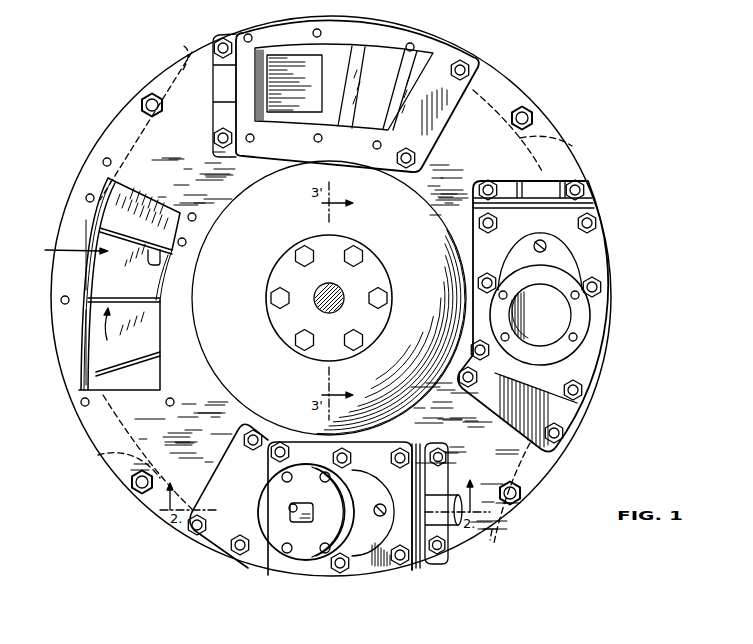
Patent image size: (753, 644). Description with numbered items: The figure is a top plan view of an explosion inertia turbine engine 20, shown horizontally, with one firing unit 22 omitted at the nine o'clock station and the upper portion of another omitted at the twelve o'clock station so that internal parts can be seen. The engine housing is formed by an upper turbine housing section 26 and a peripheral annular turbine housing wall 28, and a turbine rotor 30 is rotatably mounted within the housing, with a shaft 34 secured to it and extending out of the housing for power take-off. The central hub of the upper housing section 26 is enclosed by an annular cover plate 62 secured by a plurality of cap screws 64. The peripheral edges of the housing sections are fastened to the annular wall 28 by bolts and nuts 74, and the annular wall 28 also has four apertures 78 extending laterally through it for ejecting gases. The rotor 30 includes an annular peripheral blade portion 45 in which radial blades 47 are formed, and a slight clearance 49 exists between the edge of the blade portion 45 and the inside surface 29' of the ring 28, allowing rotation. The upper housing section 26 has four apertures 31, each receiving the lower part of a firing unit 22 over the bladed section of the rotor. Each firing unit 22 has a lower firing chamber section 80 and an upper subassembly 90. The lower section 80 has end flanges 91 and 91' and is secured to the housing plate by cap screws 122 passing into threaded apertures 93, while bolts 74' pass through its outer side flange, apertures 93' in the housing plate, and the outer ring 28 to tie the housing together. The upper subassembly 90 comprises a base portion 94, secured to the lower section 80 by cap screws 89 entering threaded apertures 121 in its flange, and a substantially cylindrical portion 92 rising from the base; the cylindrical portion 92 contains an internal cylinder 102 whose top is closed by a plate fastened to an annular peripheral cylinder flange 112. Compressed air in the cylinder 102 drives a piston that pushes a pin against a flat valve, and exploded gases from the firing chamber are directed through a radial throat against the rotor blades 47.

The explosion inertia turbine engine 20 is at (530, 80).
The firing unit 22 is at (273, 153).
The upper turbine housing section 26 is at (238, 315).
The peripheral annular turbine housing wall 28 is at (88, 380).
The inside surface of annular side housing ring 29' is at (89, 314).
The turbine rotor 30 is at (64, 250).
The aperture 31 is at (80, 350).
The shaft 34 is at (327, 284).
The annular peripheral blade portion 45 is at (97, 278).
The radial blade 47 is at (133, 298).
The clearance 49 is at (100, 209).
The annular cover plate 62 is at (371, 266).
The cap screw 64 is at (352, 337).
The bolts and nuts 74 is at (338, 295).
The bolt 74' is at (398, 284).
The aperture 78 is at (323, 293).
The lower firing chamber section 80 is at (340, 145).
The cap screw 89 is at (481, 226).
The upper subassembly 90 is at (364, 560).
The end flange 91 is at (389, 302).
The end flange 91' is at (383, 345).
The substantially cylindrical portion 92 is at (556, 264).
The threaded aperture 93 is at (174, 313).
The aperture 93' is at (64, 283).
The base portion 94 is at (488, 255).
The internal cylinder 102 is at (558, 338).
The annular peripheral cylinder flange 112 is at (583, 325).
The threaded aperture 121 is at (313, 33).
The cap screw 122 is at (214, 144).